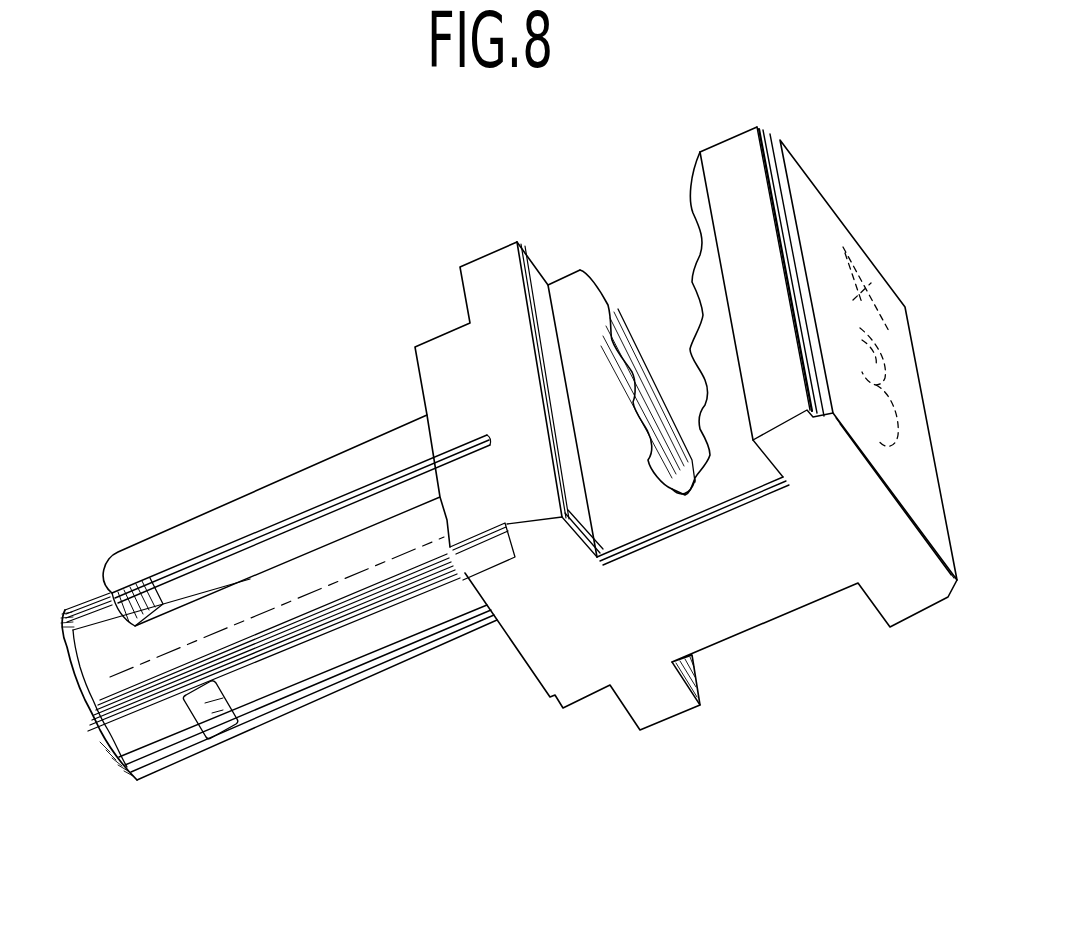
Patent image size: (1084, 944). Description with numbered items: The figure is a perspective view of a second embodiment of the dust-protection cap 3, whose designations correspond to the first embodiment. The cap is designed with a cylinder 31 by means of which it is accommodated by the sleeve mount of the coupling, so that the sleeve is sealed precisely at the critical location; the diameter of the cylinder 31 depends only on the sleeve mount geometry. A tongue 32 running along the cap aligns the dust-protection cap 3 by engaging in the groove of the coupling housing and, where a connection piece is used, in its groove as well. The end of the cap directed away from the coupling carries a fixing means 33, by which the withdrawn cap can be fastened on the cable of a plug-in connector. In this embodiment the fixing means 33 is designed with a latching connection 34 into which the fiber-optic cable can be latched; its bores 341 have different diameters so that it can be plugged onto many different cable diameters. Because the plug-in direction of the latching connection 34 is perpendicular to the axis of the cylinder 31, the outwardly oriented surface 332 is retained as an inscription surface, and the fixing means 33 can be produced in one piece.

The dust-protection cap 3 is at (368, 347).
The cylinder 31 is at (310, 665).
The tongue 32 is at (257, 507).
The fixing means 33 is at (603, 746).
The latching connection 34 is at (641, 210).
The bores 341 is at (693, 377).
The outwardly oriented surface 332 is at (920, 492).